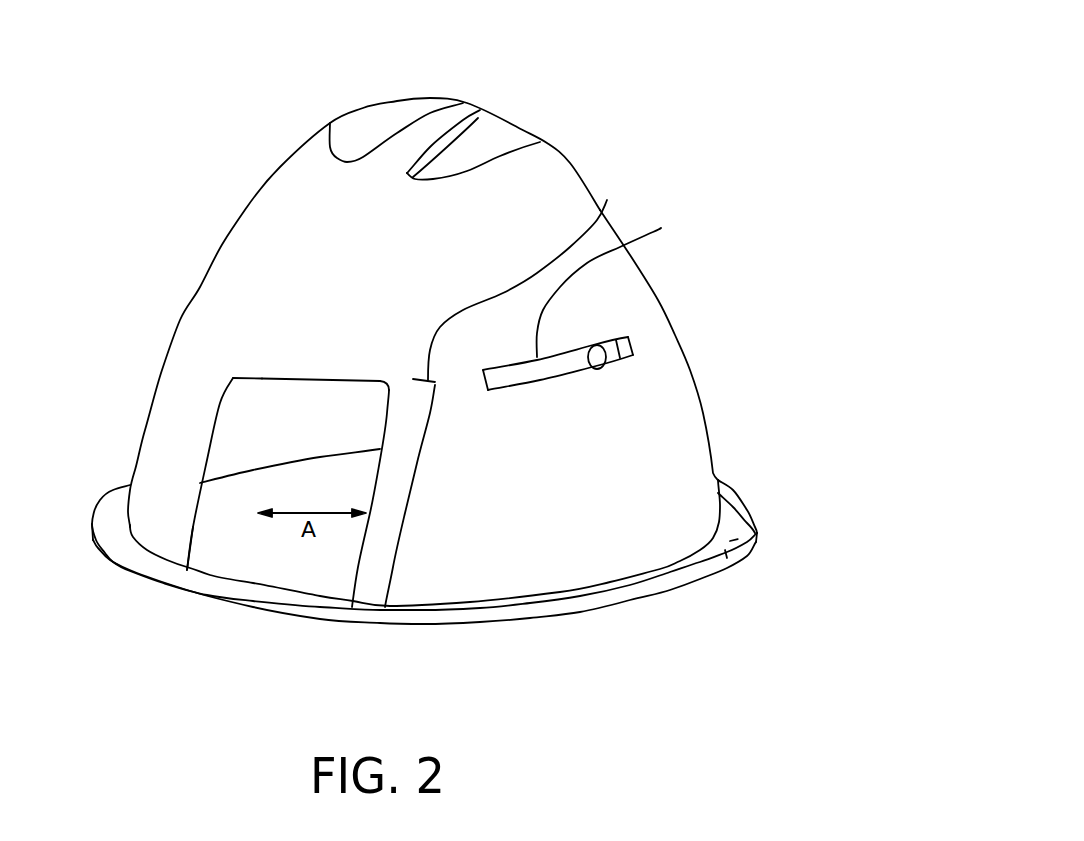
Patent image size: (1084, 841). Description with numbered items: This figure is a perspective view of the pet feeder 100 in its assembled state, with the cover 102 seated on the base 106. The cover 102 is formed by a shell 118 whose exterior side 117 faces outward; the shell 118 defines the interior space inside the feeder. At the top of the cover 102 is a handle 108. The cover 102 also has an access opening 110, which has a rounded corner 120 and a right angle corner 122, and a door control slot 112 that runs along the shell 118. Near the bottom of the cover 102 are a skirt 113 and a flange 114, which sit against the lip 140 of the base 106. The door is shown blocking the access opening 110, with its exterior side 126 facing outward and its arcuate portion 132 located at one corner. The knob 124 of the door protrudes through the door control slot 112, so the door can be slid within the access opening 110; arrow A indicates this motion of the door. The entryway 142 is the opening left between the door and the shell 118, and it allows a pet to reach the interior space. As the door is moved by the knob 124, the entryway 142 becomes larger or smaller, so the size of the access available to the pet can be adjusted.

The pet feeder 100 is at (725, 128).
The cover 102 is at (690, 370).
The base 106 is at (268, 577).
The handle 108 is at (458, 123).
The access opening 110 is at (217, 420).
The door control slot 112 is at (615, 286).
The skirt 113 is at (730, 518).
The flange 114 is at (757, 535).
The exterior side 117 is at (600, 518).
The shell 118 is at (365, 298).
The rounded corner 120 is at (233, 378).
The right angle corner 122 is at (607, 200).
The knob 124 is at (600, 343).
The exterior side 126 is at (367, 587).
The arcuate portion 132 is at (382, 390).
The lip 140 is at (683, 592).
The entryway 142 is at (217, 517).